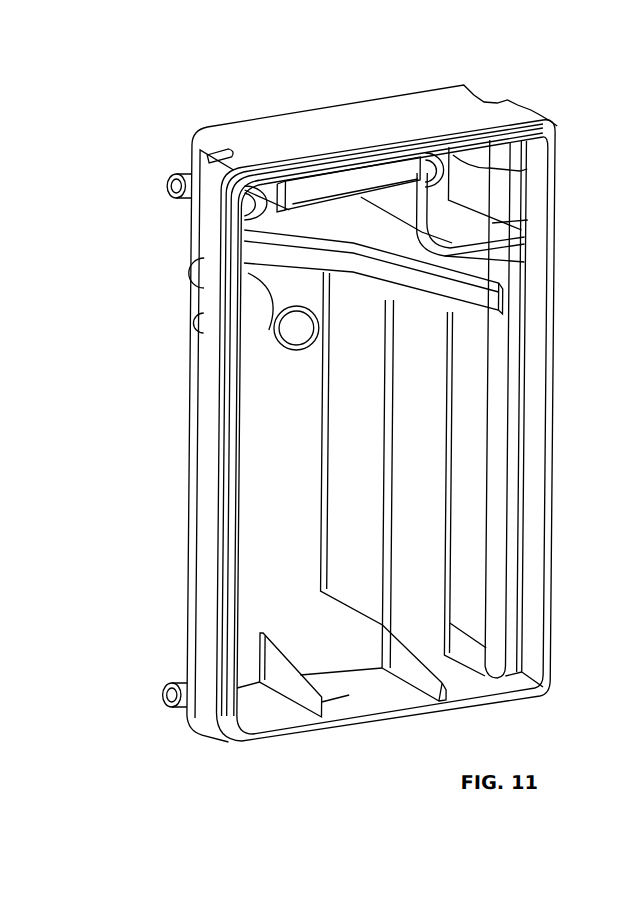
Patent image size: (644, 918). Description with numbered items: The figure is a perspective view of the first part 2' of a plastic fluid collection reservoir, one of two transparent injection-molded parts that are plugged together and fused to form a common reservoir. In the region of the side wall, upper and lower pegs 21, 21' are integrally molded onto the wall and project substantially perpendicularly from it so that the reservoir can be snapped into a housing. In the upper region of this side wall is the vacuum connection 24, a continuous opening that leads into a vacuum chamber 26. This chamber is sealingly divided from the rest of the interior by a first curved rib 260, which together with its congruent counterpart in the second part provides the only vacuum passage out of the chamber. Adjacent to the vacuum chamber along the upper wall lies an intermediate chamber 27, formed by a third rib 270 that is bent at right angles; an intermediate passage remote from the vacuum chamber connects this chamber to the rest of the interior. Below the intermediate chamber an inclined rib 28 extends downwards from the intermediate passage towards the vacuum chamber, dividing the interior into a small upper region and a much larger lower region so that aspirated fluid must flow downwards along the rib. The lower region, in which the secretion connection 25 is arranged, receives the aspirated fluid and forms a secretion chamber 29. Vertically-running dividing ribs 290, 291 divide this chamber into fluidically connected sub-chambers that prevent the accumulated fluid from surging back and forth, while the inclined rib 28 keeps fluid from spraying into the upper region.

The first part 2' is at (372, 395).
The upper peg 21 is at (178, 145).
The lower peg 21' is at (169, 732).
The vacuum connection 24 is at (428, 165).
The secretion connection 25 is at (192, 276).
The vacuum chamber 26 is at (484, 189).
The first curved rib 260 is at (535, 252).
The intermediate chamber 27 is at (352, 172).
The third rib 270 is at (267, 218).
The inclined rib 28 is at (373, 272).
The secretion chamber 29 is at (276, 487).
The dividing rib 290 is at (343, 418).
The dividing rib 291 is at (273, 657).